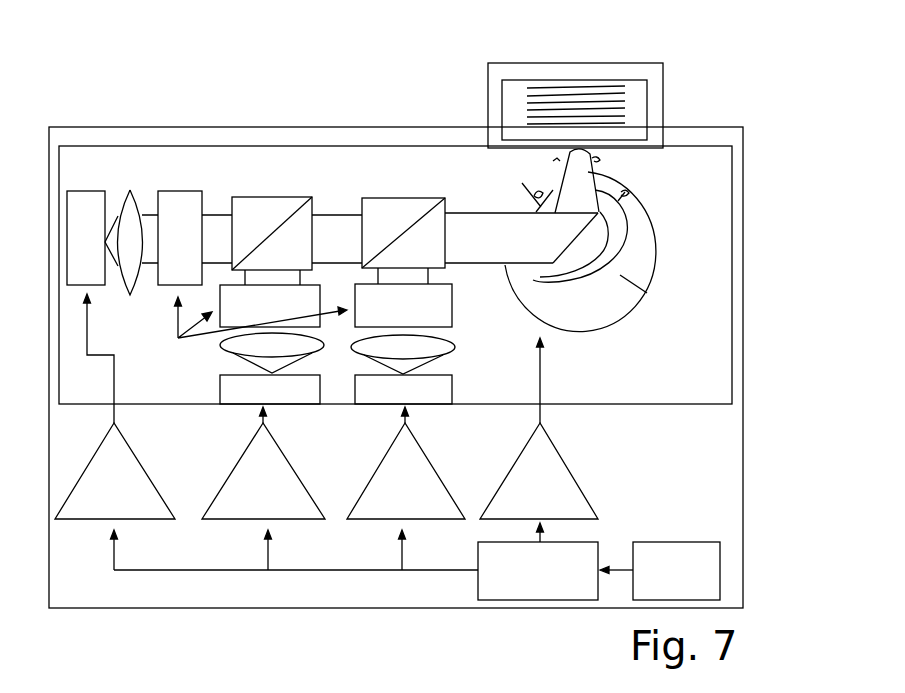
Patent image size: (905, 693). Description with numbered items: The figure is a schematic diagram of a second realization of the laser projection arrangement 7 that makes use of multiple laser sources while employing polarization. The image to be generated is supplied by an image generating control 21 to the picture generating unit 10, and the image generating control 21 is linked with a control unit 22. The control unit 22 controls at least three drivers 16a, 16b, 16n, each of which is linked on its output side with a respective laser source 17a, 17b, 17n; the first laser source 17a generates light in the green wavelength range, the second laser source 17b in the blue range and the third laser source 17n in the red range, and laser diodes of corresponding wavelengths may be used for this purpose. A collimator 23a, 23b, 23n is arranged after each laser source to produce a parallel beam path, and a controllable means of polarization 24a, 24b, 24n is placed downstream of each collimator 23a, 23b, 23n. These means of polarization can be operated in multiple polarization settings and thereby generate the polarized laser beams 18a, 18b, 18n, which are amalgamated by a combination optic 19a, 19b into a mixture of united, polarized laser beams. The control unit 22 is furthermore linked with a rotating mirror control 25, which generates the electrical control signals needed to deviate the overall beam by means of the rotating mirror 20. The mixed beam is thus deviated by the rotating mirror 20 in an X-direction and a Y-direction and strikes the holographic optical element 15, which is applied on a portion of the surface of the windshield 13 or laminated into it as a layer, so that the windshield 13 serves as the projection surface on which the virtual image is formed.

The laser projection arrangement 7 is at (168, 64).
The picture generating unit 10 is at (747, 598).
The windshield 13 is at (612, 70).
The holographic optical element 15 is at (638, 88).
The driver 16a is at (152, 519).
The driver 16b is at (258, 519).
The driver 16n is at (393, 519).
The first laser source 17a is at (92, 202).
The second laser source 17b is at (252, 395).
The third laser source 17n is at (456, 392).
The polarized laser beam 18a is at (148, 225).
The polarized laser beam 18b is at (295, 280).
The polarized laser beam 18n is at (433, 273).
The combination optic 19a is at (260, 210).
The combination optic 19b is at (385, 210).
The rotating mirror 20 is at (630, 240).
The image generating control 21 is at (675, 575).
The control unit 22 is at (552, 601).
The collimator 23a is at (119, 224).
The collimator 23b is at (229, 352).
The collimator 23n is at (455, 347).
The controllable means of polarization 24a is at (175, 200).
The controllable means of polarization 24b is at (235, 316).
The controllable means of polarization 24n is at (443, 315).
The rotating mirror control 25 is at (563, 477).